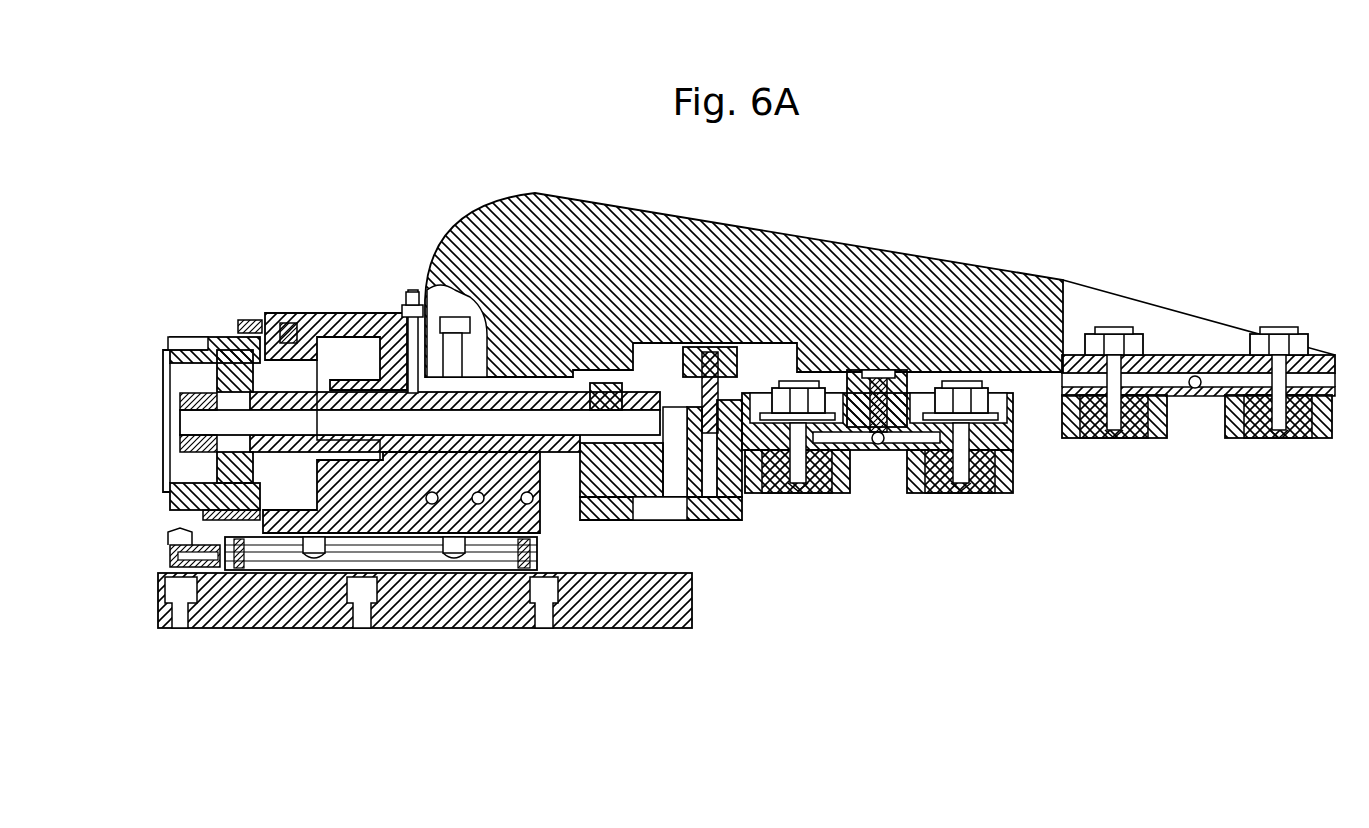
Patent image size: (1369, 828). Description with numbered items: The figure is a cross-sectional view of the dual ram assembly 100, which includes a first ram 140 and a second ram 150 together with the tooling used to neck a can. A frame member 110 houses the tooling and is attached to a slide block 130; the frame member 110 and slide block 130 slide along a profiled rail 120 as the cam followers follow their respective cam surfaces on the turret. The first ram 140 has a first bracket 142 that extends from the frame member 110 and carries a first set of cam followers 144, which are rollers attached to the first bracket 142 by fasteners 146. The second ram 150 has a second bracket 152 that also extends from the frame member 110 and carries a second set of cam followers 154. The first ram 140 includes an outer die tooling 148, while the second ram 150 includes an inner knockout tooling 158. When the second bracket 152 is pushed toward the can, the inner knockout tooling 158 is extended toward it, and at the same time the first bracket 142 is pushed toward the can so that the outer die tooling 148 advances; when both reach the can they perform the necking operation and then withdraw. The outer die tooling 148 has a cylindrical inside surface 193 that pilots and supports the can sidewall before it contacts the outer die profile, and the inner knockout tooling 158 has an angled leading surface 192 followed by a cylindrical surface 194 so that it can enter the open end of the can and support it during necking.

The dual ram assembly 100 is at (847, 631).
The frame member 110 is at (352, 312).
The profiled rail 120 is at (652, 618).
The slide block 130 is at (537, 513).
The first ram 140 is at (880, 277).
The first bracket 142 is at (828, 250).
The first set of cam followers 144 is at (1128, 443).
The fasteners 146 is at (1112, 328).
The outer die tooling 148 is at (213, 335).
The second ram 150 is at (796, 476).
The second bracket 152 is at (742, 458).
The second set of cam followers 154 is at (817, 478).
The inner knockout tooling 158 is at (166, 422).
The angled leading surface 192 is at (165, 350).
The cylindrical inside surface 193 is at (168, 348).
The following cylindrical surface 194 is at (177, 343).